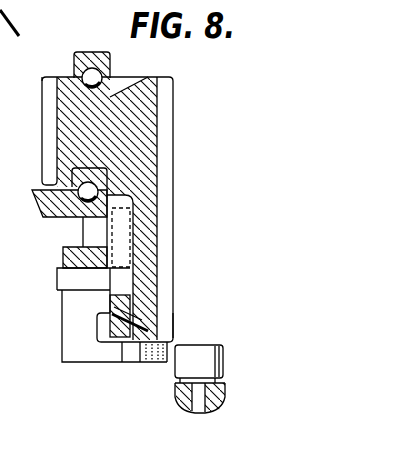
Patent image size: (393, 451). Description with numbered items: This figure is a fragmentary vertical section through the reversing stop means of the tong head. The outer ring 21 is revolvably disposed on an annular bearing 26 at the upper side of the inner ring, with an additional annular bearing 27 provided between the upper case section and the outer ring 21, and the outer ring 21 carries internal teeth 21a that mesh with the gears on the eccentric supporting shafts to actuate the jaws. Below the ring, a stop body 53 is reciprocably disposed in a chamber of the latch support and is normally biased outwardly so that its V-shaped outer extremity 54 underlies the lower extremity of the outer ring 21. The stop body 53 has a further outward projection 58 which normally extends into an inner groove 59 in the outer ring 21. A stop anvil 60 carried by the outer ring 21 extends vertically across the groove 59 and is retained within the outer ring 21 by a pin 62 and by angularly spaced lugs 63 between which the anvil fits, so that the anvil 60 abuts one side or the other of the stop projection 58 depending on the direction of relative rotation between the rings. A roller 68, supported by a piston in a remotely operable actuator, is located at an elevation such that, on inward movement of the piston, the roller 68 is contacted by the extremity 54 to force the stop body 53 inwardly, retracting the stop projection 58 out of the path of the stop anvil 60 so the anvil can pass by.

The outer ring 21 is at (181, 106).
The internal teeth 21a is at (50, 117).
The annular bearing 26 is at (72, 172).
The annular bearing 27 is at (100, 46).
The stop body 53 is at (70, 340).
The V-shaped outer extremity 54 is at (128, 362).
The outward projection 58 is at (130, 296).
The inner groove 59 is at (130, 277).
The stop anvil 60 is at (107, 281).
The pin 62 is at (143, 316).
The lugs 63 is at (132, 206).
The roller 68 is at (176, 371).